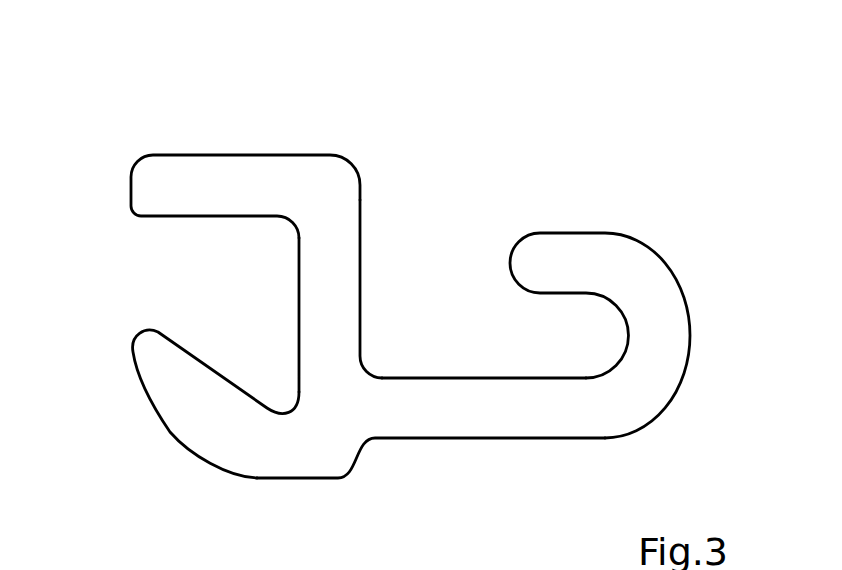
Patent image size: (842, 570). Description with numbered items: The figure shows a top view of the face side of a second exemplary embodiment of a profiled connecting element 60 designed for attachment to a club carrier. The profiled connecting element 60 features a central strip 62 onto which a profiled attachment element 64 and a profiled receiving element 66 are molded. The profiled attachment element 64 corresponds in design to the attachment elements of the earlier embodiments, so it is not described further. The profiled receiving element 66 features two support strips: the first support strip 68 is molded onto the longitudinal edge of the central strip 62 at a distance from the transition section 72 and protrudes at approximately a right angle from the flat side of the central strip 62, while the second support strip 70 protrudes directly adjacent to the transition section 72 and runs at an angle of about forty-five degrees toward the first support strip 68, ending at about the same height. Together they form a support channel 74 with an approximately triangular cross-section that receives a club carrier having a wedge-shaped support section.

The profiled connecting element 60 is at (400, 279).
The central strip 62 is at (343, 298).
The profiled attachment element 64 is at (649, 204).
The profiled receiving element 66 is at (275, 203).
The first support strip 68 is at (237, 177).
The second support strip 70 is at (223, 433).
The transition section 72 is at (445, 423).
The support channel 74 is at (257, 316).